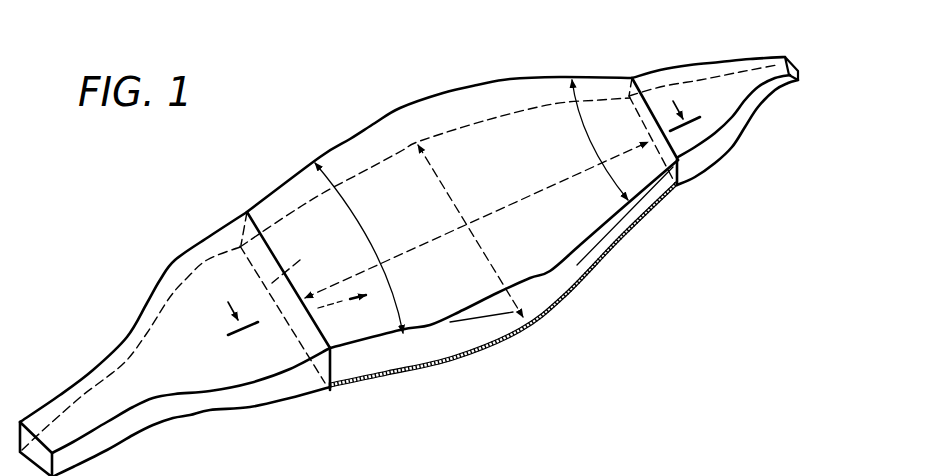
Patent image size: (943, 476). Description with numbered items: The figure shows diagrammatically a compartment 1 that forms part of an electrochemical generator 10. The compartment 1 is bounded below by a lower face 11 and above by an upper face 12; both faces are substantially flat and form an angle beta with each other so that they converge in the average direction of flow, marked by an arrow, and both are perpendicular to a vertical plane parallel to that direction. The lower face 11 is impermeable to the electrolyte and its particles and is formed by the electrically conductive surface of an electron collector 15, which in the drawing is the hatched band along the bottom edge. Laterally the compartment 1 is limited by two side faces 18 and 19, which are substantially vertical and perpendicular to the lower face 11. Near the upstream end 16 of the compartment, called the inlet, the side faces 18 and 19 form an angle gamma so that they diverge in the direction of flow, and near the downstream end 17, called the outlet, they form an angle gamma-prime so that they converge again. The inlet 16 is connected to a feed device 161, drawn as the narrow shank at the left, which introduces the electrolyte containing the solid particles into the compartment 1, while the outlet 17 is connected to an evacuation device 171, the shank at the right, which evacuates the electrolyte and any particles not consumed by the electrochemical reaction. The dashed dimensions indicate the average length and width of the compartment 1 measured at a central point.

The electrochemical generator 10 is at (641, 52).
The compartment 1 is at (461, 80).
The upper face 12 is at (335, 148).
The side face 19 is at (280, 202).
The upstream end (inlet) 16 is at (315, 252).
The feed device 161 is at (147, 303).
The evacuation device 171 is at (777, 42).
The downstream end (outlet) 17 is at (678, 160).
The lower face 11 is at (457, 350).
The electron collector 15 is at (435, 372).
The side face 18 is at (368, 350).